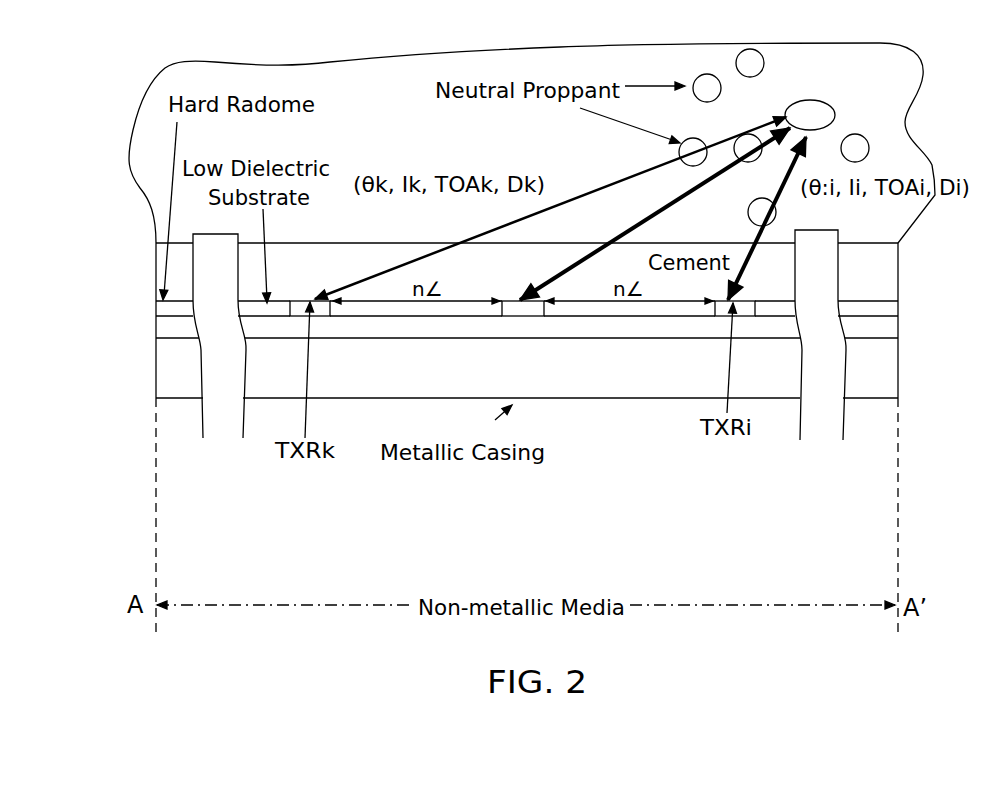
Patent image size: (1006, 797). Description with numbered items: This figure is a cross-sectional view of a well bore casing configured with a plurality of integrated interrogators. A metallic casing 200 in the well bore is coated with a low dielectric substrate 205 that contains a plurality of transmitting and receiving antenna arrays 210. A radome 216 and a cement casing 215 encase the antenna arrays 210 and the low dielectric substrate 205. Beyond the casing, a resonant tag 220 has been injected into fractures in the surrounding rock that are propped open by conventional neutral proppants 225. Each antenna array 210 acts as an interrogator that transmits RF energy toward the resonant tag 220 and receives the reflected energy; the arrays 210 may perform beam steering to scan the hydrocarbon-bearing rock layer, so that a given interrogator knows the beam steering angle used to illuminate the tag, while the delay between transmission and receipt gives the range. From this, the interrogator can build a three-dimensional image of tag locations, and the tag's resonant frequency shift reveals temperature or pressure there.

The metallic casing 200 is at (890, 372).
The low dielectric substrate 205 is at (890, 310).
The transmitting and receiving antenna arrays 210 is at (303, 300).
The cement casing 215 is at (890, 277).
The radome 216 is at (160, 292).
The resonant tag 220 is at (810, 100).
The neutral proppants 225 is at (750, 63).